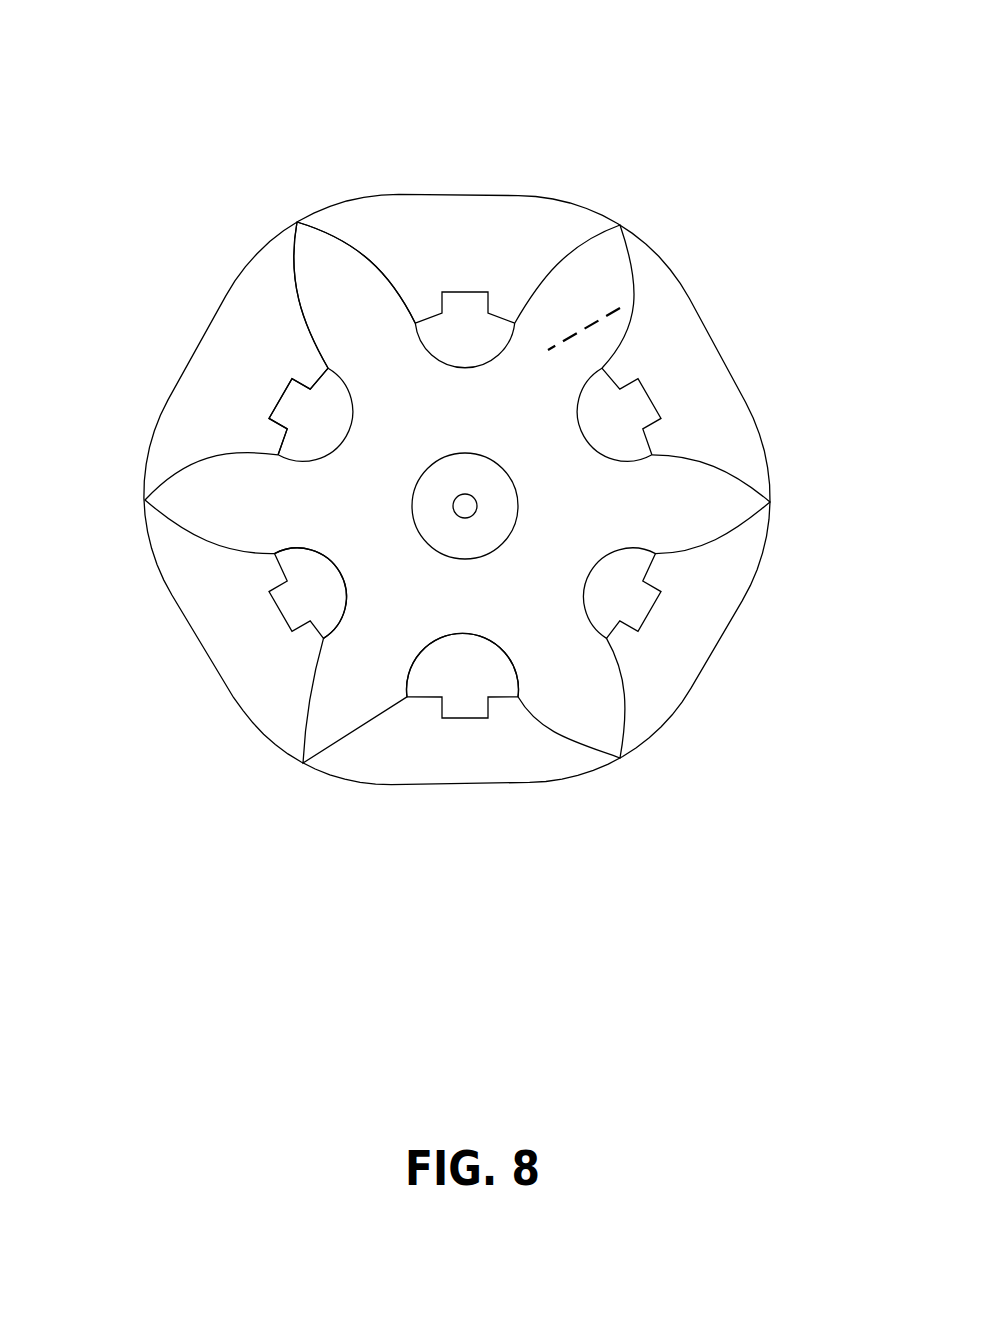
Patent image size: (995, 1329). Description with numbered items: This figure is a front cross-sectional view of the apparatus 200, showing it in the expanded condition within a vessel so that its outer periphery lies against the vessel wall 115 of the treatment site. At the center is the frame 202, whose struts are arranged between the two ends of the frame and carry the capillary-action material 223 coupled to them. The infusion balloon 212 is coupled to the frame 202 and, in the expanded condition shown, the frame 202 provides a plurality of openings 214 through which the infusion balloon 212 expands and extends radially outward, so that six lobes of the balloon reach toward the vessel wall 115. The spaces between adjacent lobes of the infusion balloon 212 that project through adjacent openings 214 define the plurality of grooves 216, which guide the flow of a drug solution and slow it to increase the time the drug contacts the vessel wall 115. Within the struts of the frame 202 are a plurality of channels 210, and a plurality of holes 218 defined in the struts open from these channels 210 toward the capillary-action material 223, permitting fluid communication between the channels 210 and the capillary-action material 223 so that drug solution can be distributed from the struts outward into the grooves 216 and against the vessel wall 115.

The apparatus 200 is at (774, 88).
The vessel wall 115 is at (185, 637).
The infusion balloon 212 is at (313, 238).
The plurality of openings 214 is at (625, 305).
The plurality of holes 218 is at (464, 308).
The frame 202 is at (318, 373).
The capillary-action material 223 is at (277, 402).
The plurality of grooves 216 is at (442, 746).
The plurality of channels 210 is at (317, 590).